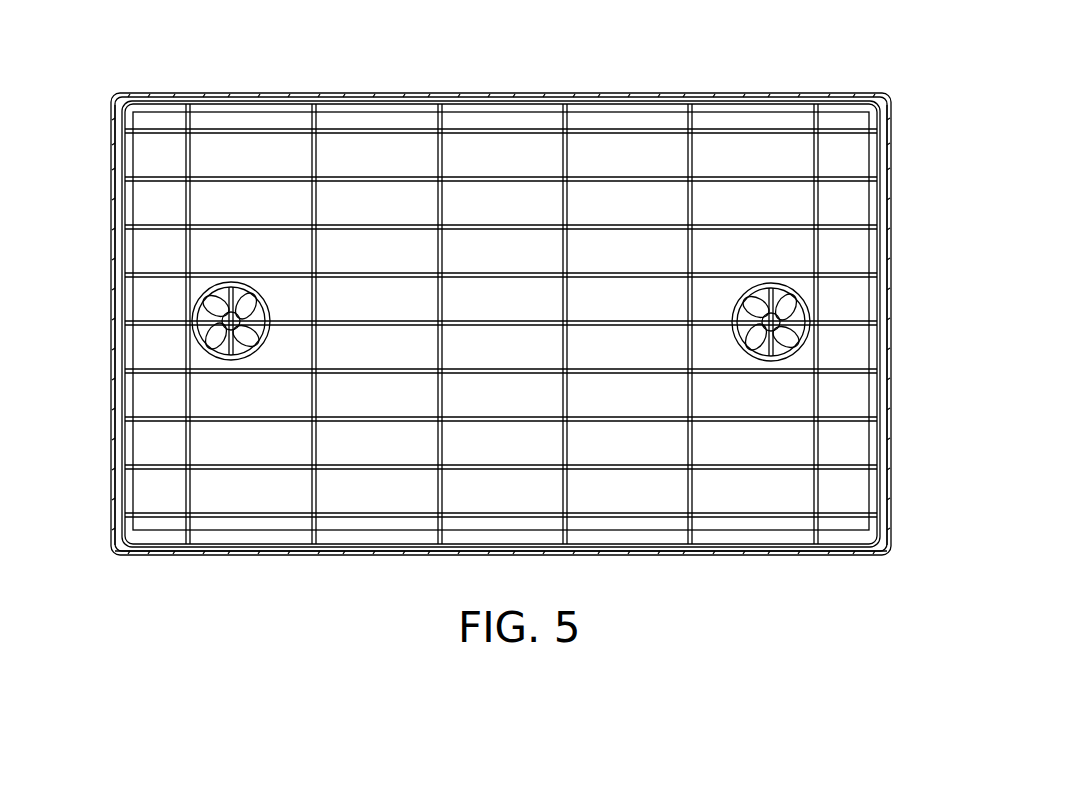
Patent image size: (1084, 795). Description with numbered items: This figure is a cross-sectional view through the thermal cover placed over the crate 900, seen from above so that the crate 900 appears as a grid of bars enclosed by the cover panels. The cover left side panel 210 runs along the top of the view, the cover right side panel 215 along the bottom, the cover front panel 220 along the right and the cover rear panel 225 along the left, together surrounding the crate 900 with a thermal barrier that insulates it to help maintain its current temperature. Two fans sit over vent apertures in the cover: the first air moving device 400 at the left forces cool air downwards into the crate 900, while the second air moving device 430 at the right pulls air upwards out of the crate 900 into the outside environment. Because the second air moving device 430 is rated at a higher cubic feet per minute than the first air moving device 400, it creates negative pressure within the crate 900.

The cover left side panel 210 is at (293, 92).
The cover right side panel 215 is at (743, 553).
The cover front panel 220 is at (890, 317).
The cover rear panel 225 is at (110, 292).
The first air moving device 400 is at (204, 350).
The second air moving device 430 is at (788, 285).
The crate 900 is at (267, 470).